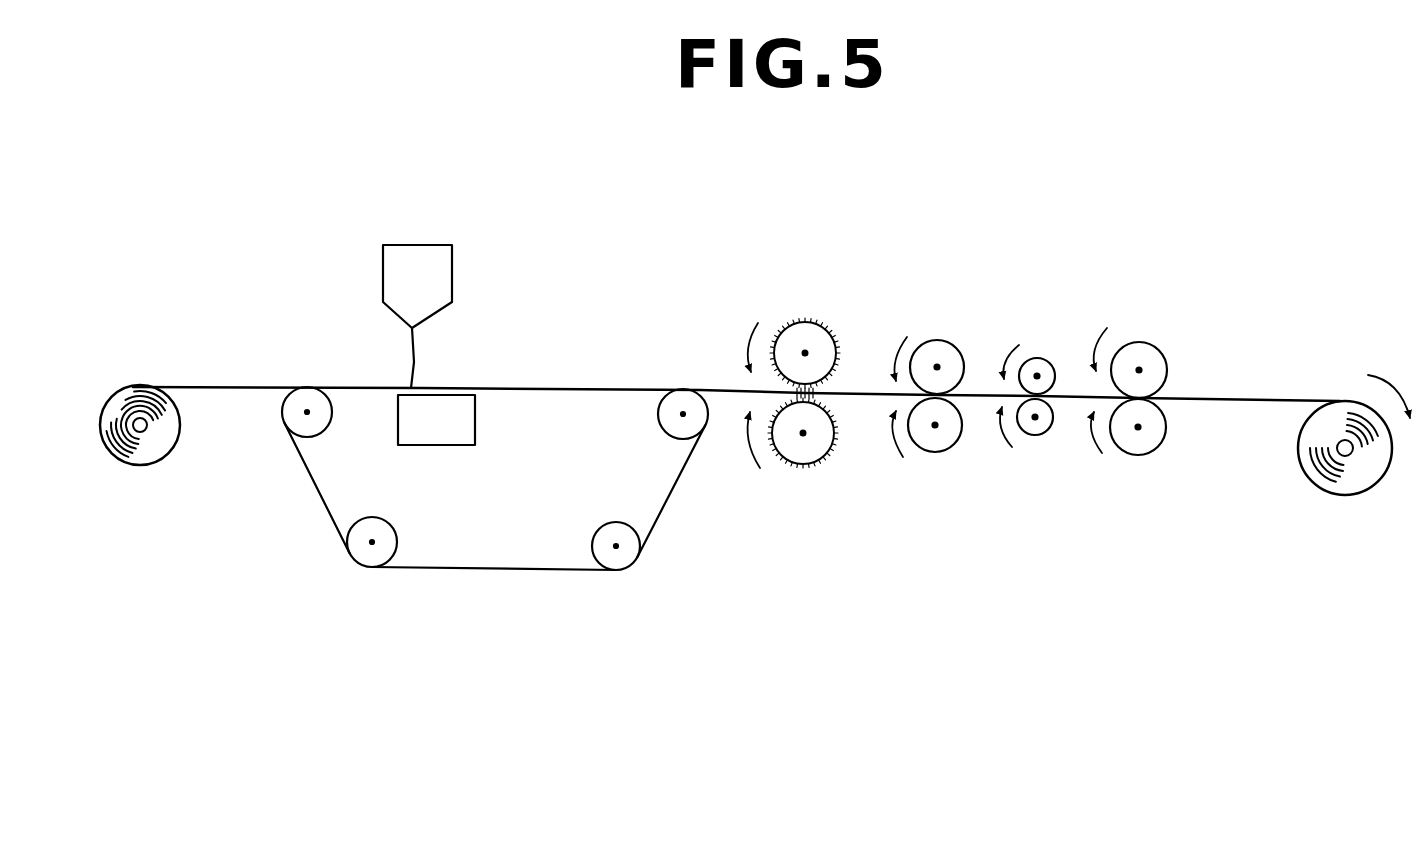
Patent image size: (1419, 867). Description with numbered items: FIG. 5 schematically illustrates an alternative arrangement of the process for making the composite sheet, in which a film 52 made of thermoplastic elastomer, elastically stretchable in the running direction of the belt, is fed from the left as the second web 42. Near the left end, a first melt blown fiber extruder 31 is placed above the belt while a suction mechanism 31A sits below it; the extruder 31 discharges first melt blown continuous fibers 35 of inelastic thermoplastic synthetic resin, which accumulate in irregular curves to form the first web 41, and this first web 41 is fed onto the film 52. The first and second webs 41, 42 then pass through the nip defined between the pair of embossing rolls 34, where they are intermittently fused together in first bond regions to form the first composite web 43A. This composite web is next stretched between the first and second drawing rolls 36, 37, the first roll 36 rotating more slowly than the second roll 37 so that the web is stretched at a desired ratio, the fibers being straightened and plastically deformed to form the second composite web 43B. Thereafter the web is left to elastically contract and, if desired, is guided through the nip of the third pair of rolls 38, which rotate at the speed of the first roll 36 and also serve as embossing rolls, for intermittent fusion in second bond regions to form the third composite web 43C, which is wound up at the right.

The first melt blown fiber extruder 31 is at (378, 243).
The suction mechanism 31A is at (472, 438).
The embossing rolls 34 is at (810, 320).
The first melt blown continuous fibers 35 is at (413, 366).
The first drawing roll 36 is at (940, 340).
The second drawing roll 37 is at (1042, 358).
The third rolls 38 is at (1153, 345).
The first web 41 is at (585, 386).
The second web 42 is at (258, 385).
The first composite web 43A is at (861, 399).
The second composite web 43B is at (976, 400).
The third composite web 43C is at (1216, 403).
The film 52 is at (210, 386).